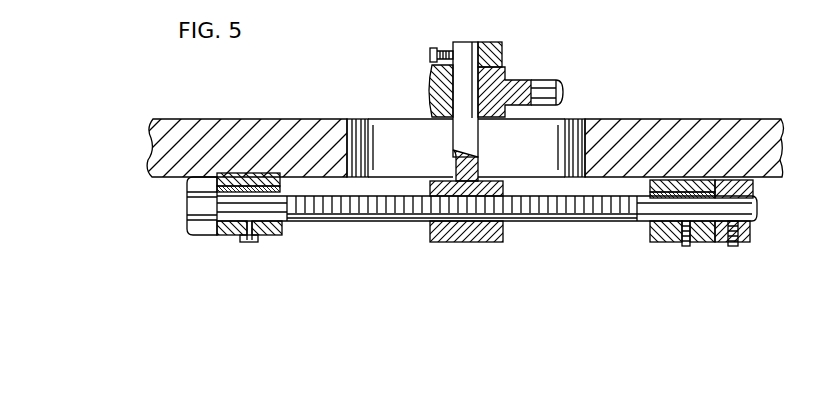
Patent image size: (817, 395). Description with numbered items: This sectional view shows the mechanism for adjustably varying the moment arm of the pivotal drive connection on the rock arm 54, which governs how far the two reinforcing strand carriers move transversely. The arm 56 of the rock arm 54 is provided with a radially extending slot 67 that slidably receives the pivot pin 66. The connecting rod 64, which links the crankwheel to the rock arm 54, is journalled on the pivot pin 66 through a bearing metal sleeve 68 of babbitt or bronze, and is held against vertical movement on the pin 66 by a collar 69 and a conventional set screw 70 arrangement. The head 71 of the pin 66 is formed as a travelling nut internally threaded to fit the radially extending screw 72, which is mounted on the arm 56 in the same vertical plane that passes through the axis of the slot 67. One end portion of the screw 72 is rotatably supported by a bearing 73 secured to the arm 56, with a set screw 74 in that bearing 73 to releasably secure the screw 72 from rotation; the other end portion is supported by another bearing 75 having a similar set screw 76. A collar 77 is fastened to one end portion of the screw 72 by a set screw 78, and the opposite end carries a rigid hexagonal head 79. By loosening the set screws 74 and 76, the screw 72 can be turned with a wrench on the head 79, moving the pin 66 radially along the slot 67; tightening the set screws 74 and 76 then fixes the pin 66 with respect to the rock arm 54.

The rock arm 54 is at (733, 121).
The arm 56 is at (681, 131).
The connecting rod 64 is at (549, 83).
The pivot pin 66 is at (467, 43).
The slot 67 is at (353, 119).
The bearing metal sleeve 68 is at (504, 73).
The collar 69 is at (500, 43).
The set screw 70 is at (432, 63).
The head 71 is at (504, 242).
The screw 72 is at (606, 222).
The bearing 73 is at (287, 234).
The set screw 74 is at (250, 242).
The bearing 75 is at (663, 247).
The set screw 76 is at (690, 246).
The collar 77 is at (752, 236).
The set screw 78 is at (736, 246).
The hexagonal head 79 is at (195, 202).